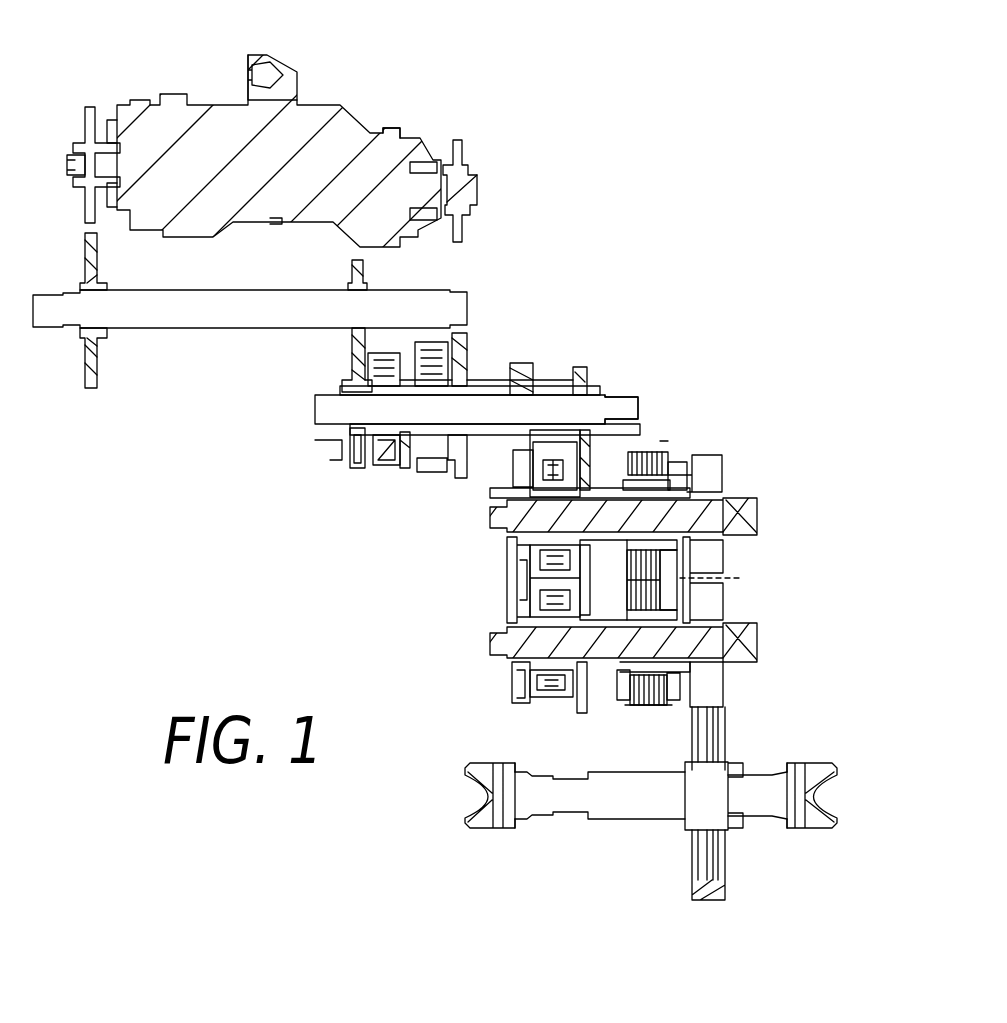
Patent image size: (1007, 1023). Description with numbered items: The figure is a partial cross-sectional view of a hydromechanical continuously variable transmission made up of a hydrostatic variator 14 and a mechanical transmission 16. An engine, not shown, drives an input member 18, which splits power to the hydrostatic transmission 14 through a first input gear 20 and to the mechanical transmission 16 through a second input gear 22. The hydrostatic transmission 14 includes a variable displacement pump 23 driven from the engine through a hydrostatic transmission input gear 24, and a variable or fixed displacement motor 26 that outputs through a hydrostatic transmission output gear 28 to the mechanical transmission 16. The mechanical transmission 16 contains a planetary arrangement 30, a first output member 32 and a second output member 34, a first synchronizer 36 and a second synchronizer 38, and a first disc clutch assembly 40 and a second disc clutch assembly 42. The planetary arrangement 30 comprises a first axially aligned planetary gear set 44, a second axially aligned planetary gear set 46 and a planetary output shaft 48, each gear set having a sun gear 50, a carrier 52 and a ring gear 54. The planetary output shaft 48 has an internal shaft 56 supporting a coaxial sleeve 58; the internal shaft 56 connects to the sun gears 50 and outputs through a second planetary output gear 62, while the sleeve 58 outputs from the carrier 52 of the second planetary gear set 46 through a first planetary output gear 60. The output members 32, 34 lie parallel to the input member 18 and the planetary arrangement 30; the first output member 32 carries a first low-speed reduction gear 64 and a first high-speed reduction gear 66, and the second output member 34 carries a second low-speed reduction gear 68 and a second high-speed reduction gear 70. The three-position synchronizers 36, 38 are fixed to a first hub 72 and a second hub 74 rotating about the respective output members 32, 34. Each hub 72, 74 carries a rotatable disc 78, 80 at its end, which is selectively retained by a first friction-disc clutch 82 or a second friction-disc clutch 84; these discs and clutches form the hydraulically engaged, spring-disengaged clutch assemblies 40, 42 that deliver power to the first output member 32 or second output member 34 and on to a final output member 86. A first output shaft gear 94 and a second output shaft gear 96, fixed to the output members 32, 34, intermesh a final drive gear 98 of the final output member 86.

The hydrostatic variator 14 is at (338, 84).
The mechanical transmission 16 is at (649, 575).
The input member 18 is at (190, 328).
The first input gear 20 is at (85, 374).
The second input gear 22 is at (365, 282).
The variable displacement pump 23 is at (181, 105).
The hydrostatic transmission input gear 24 is at (85, 107).
The variable or fixed displacement motor 26 is at (388, 137).
The hydrostatic transmission output gear 28 is at (463, 155).
The planetary arrangement 30 is at (377, 525).
The first output member 32 is at (490, 518).
The second output member 34 is at (490, 642).
The first synchronizer 36 is at (546, 470).
The second synchronizer 38 is at (545, 700).
The first disc clutch assembly 40 is at (693, 430).
The second disc clutch assembly 42 is at (628, 705).
The first axially aligned planetary gear set 44 is at (388, 462).
The second axially aligned planetary gear set 46 is at (410, 470).
The planetary output shaft 48 is at (568, 355).
The sun gear 50 is at (380, 424).
The carrier 52 is at (365, 438).
The ring gear 54 is at (437, 475).
The internal shaft 56 is at (640, 398).
The sleeve 58 is at (475, 375).
The first planetary output gear 60 is at (528, 372).
The second planetary output gear 62 is at (585, 372).
The first low-speed reduction gear 64 is at (517, 556).
The first high-speed reduction gear 66 is at (589, 470).
The second low-speed reduction gear 68 is at (513, 702).
The second high-speed reduction gear 70 is at (581, 710).
The first hub 72 is at (625, 556).
The second hub 74 is at (617, 672).
The rotatable disc 78 is at (653, 452).
The rotatable disc 80 is at (648, 706).
The first friction-disc clutch 82 is at (670, 453).
The second friction-disc clutch 84 is at (670, 702).
The final output member 86 is at (838, 810).
The first output shaft gear 94 is at (722, 471).
The second output shaft gear 96 is at (723, 591).
The final drive gear 98 is at (725, 726).